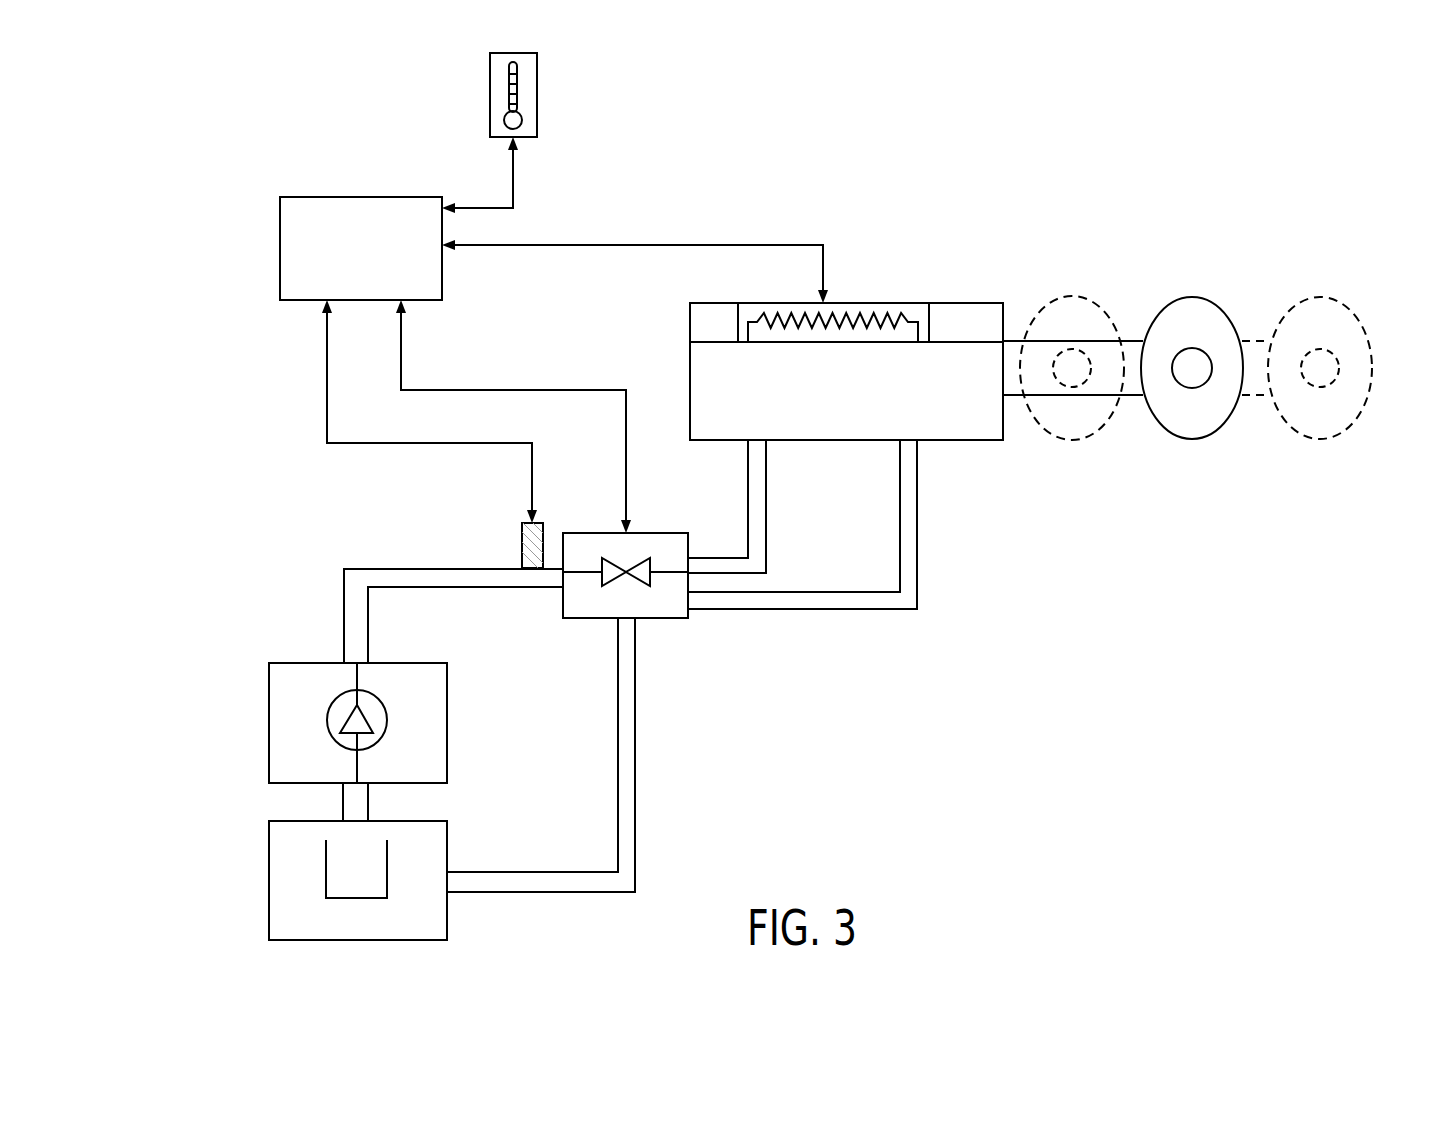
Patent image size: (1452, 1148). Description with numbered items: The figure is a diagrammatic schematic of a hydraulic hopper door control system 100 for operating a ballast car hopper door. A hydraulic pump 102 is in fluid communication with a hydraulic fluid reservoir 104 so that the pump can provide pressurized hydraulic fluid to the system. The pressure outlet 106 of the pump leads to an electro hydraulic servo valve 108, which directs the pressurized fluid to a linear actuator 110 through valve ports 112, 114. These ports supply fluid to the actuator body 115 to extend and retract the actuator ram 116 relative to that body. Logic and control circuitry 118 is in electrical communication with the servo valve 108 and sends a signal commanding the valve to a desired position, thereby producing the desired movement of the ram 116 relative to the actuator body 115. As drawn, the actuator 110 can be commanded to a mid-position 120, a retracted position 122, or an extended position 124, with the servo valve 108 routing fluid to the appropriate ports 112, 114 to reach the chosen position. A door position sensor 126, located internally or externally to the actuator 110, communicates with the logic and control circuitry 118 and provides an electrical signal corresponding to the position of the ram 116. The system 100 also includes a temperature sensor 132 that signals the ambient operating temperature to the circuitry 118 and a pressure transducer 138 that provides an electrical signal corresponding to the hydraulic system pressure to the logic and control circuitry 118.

The hydraulic hopper door control system 100 is at (1085, 143).
The hydraulic pump 102 is at (269, 728).
The hydraulic fluid reservoir 104 is at (269, 882).
The pressure outlet 106 is at (350, 620).
The electro hydraulic servo valve 108 is at (663, 608).
The linear actuator 110 is at (985, 418).
The valve port 112 is at (725, 567).
The valve port 114 is at (728, 600).
The actuator body 115 is at (932, 443).
The actuator ram 116 is at (1133, 337).
The logic and control circuitry 118 is at (280, 245).
The mid-position 120 is at (1190, 297).
The retracted position 122 is at (1063, 440).
The extended position 124 is at (1318, 440).
The door position sensor 126 is at (842, 300).
The temperature sensor 132 is at (537, 118).
The pressure transducer 138 is at (530, 540).